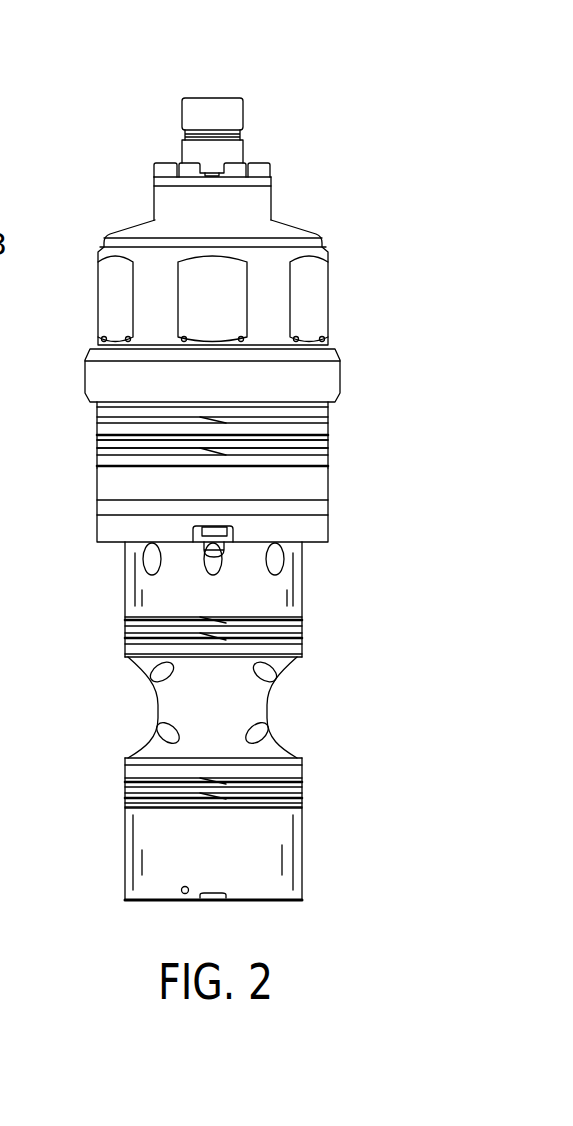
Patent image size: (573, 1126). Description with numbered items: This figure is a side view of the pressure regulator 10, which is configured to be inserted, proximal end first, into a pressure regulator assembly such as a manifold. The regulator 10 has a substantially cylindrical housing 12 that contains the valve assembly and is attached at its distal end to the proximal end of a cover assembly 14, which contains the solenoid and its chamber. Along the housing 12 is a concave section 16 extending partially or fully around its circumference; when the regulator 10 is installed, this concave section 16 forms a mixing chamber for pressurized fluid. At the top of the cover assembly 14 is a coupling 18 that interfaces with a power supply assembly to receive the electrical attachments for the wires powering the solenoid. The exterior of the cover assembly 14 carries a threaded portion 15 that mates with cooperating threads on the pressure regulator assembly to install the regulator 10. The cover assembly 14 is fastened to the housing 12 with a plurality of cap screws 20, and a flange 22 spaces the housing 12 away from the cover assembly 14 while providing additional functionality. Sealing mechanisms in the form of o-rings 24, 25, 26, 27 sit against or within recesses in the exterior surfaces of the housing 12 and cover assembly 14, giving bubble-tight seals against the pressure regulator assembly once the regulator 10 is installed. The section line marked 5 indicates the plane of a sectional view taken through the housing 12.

The pressure regulator 10 is at (320, 70).
The housing 12 is at (302, 852).
The cover assembly 14 is at (291, 224).
The threaded portion 15 is at (341, 378).
The concave section 16 is at (290, 703).
The coupling 18 is at (196, 98).
The cap screws 20 is at (233, 531).
The flange 22 is at (330, 506).
The o-ring 24 is at (98, 428).
The o-ring 25 is at (98, 458).
The o-ring 26 is at (125, 627).
The o-ring 27 is at (125, 792).
The section line 5- 5 is at (337, 616).